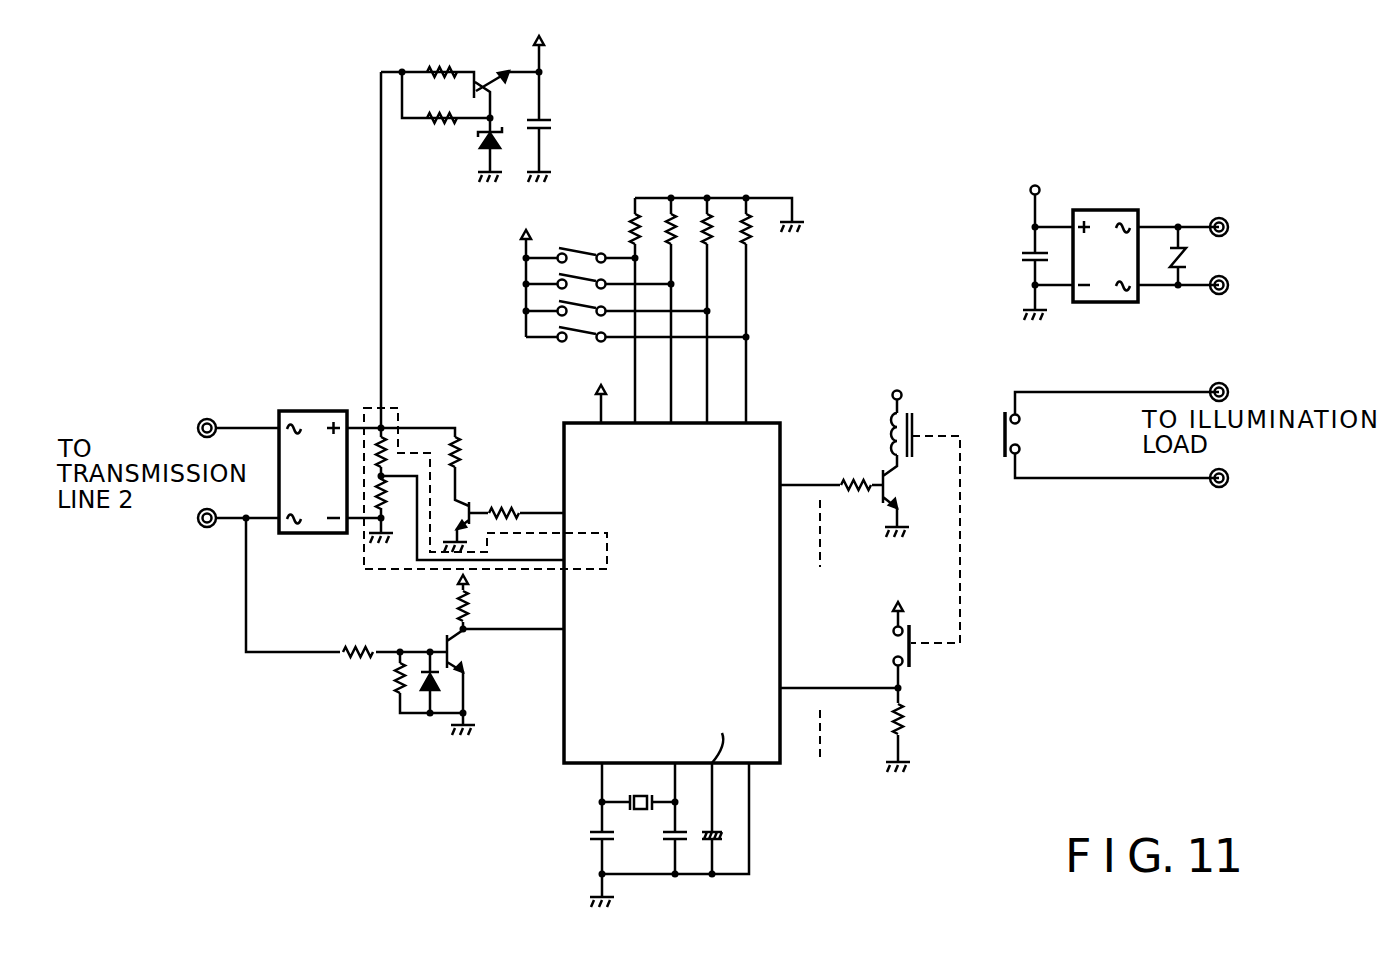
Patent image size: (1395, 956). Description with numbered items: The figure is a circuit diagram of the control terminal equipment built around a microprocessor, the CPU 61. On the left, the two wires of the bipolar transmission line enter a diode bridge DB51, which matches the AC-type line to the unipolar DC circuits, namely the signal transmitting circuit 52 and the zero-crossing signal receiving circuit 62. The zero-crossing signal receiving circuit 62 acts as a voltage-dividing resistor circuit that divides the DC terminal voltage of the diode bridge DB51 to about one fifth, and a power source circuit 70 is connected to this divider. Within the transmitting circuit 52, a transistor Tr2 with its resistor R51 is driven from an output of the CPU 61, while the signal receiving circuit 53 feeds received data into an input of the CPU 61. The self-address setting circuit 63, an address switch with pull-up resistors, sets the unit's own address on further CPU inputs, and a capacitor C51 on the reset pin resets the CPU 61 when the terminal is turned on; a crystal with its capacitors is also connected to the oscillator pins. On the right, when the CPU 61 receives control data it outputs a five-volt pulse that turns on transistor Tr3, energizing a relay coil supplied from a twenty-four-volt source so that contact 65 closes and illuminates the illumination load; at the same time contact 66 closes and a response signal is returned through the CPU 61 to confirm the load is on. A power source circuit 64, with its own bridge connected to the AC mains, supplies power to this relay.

The power source circuit 70 is at (488, 51).
The self-address setting circuit 63 is at (721, 184).
The microprocessor (CPU) 61 is at (564, 748).
The zero-crossing signal receiving circuit 62 is at (414, 572).
The signal transmitting circuit 52 is at (553, 491).
The signal receiving circuit 53 is at (343, 714).
The contact 65 is at (655, 857).
The contact 66 is at (911, 640).
The power source circuit 64 is at (1192, 196).
The diode bridge DB51 is at (314, 472).
The resistor R51 is at (480, 452).
The transistor Tr2 is at (503, 509).
The transistor Tr3 is at (857, 451).
The capacitor C51 is at (714, 837).